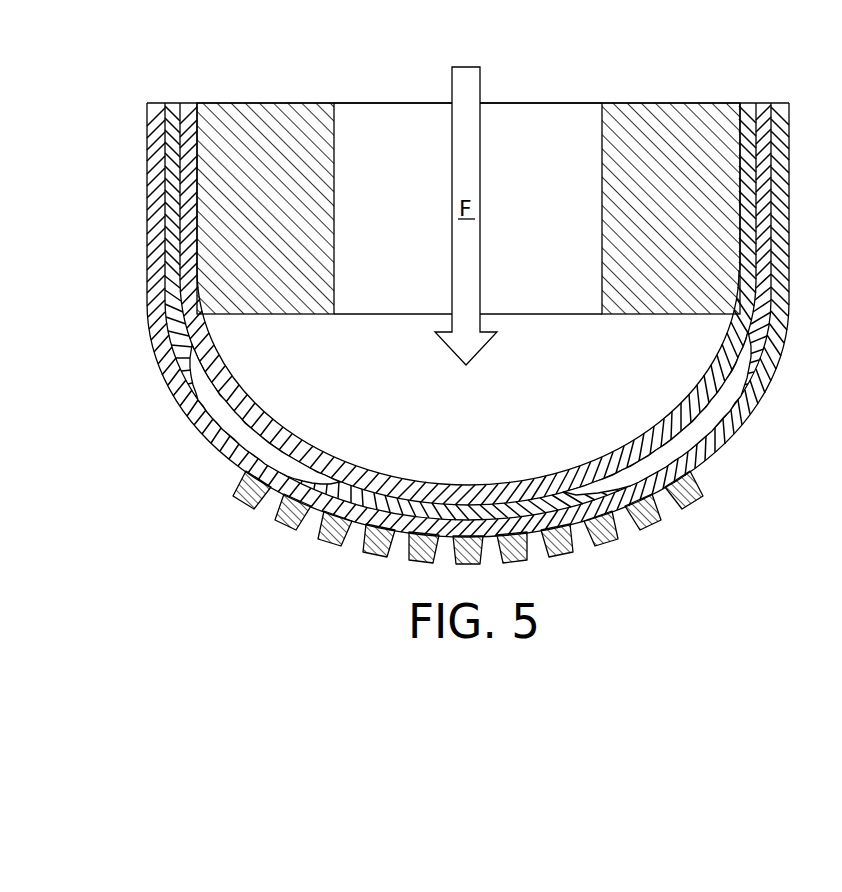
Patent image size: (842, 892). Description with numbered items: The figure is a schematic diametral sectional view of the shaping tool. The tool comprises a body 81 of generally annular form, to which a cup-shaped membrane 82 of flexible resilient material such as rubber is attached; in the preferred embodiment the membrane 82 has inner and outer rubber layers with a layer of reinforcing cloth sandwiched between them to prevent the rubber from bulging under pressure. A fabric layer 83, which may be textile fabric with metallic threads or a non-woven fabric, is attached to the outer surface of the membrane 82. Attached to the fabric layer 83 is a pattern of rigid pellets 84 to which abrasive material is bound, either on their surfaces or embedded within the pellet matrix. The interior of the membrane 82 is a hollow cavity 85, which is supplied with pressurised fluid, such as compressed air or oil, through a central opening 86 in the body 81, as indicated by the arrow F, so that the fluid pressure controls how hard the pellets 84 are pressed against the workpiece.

The body 81 is at (712, 227).
The cup-shaped membrane 82 is at (184, 345).
The fabric layer 83 is at (190, 386).
The rigid pellets 84 is at (693, 487).
The hollow cavity 85 is at (710, 372).
The central opening 86 is at (538, 122).